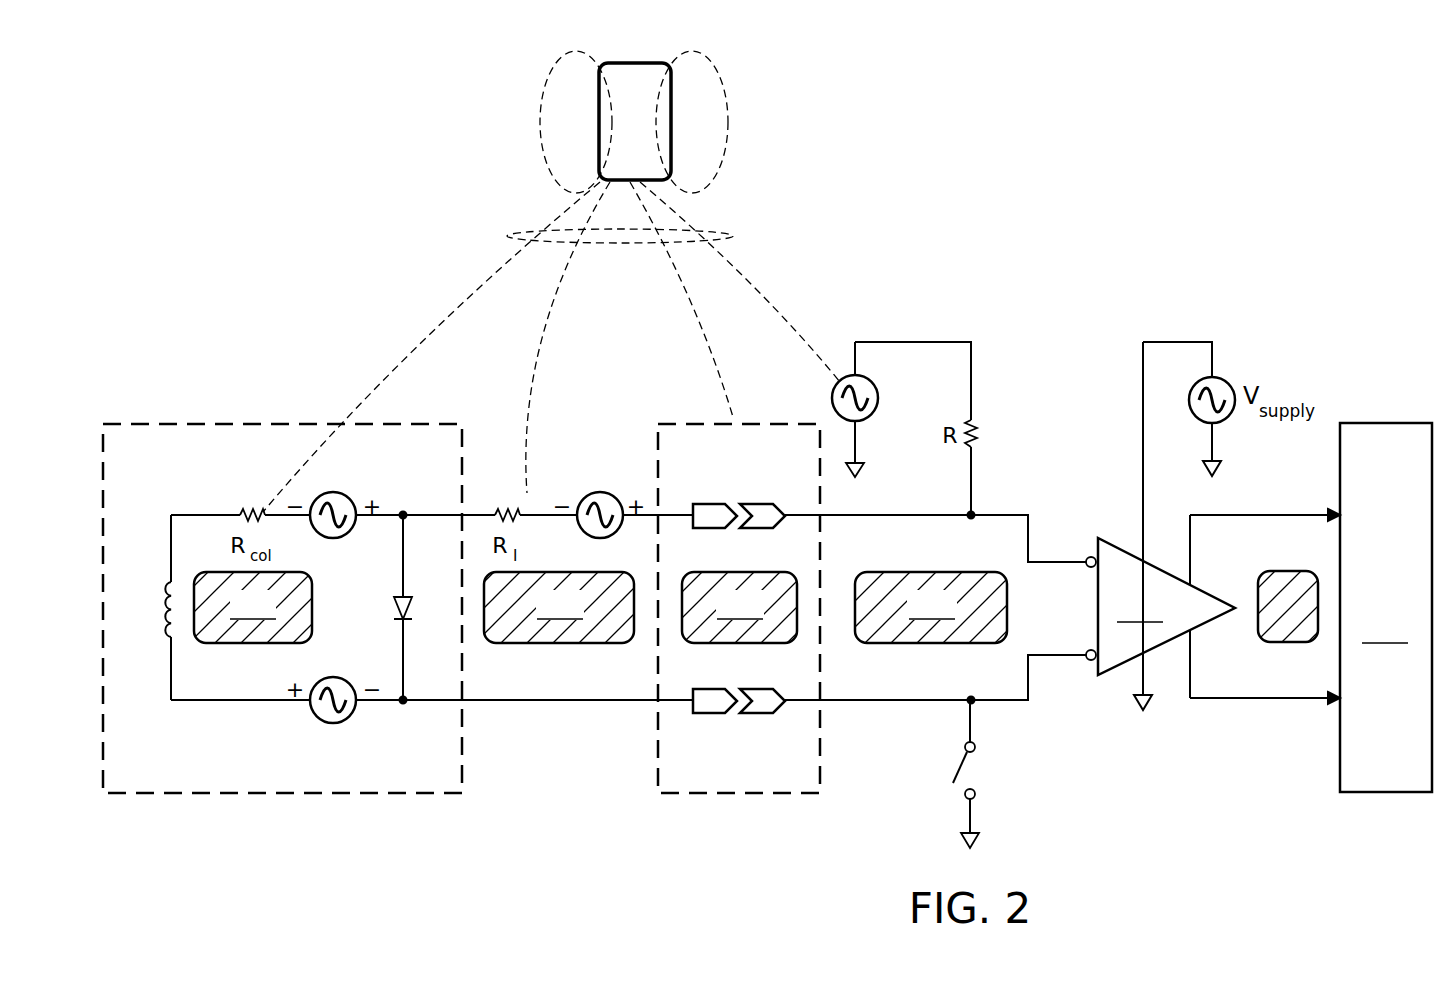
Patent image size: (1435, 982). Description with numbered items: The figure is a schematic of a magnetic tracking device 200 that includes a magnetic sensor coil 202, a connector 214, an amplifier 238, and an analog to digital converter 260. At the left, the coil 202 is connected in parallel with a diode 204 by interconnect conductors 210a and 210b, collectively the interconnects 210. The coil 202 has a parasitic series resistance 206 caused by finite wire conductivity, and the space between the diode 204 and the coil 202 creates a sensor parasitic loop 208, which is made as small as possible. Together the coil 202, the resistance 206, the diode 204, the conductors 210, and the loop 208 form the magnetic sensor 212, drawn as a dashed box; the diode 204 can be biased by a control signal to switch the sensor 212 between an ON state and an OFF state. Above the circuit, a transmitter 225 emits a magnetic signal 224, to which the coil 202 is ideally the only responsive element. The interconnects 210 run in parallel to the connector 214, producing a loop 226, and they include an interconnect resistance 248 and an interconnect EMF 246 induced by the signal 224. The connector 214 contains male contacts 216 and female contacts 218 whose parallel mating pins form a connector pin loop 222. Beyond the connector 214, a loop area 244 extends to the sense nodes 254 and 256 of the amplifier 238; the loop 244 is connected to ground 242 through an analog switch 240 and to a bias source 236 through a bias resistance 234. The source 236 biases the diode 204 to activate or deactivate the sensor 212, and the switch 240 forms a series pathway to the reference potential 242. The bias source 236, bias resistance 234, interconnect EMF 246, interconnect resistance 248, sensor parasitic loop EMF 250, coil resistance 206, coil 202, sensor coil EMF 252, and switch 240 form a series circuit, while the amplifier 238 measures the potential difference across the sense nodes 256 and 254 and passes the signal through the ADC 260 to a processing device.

The magnetic tracking device 200 is at (1324, 117).
The magnetic sensor coil 202 is at (165, 640).
The diode 204 is at (394, 609).
The parasitic series resistance 206 is at (250, 510).
The sensor parasitic loop 208 is at (253, 607).
The interconnects 210 is at (240, 702).
The interconnect conductor 210a is at (430, 513).
The interconnect conductor 210b is at (430, 702).
The magnetic sensor 212 is at (208, 804).
The connector 214 is at (721, 804).
The male contacts 216 is at (716, 504).
The female contacts 218 is at (762, 504).
The connector pin loop 222 is at (739, 607).
The magnetic signal 224 is at (540, 114).
The transmitter 225 is at (636, 63).
The loop 226 is at (559, 607).
The bias resistance 234 is at (983, 432).
The bias supply 236 is at (879, 398).
The differential amplifier 238 is at (1166, 606).
The analog switch 240 is at (956, 768).
The ground 242 is at (862, 472).
The loop area 244 is at (931, 607).
The interconnect EMF 246 is at (598, 492).
The interconnect resistance 248 is at (506, 512).
The sensor parasitic loop EMF 250 is at (333, 492).
The sensor coil EMF 252 is at (333, 724).
The sense node 254 is at (1087, 557).
The sense node 256 is at (1087, 660).
The analog to digital converter 260 is at (1386, 607).